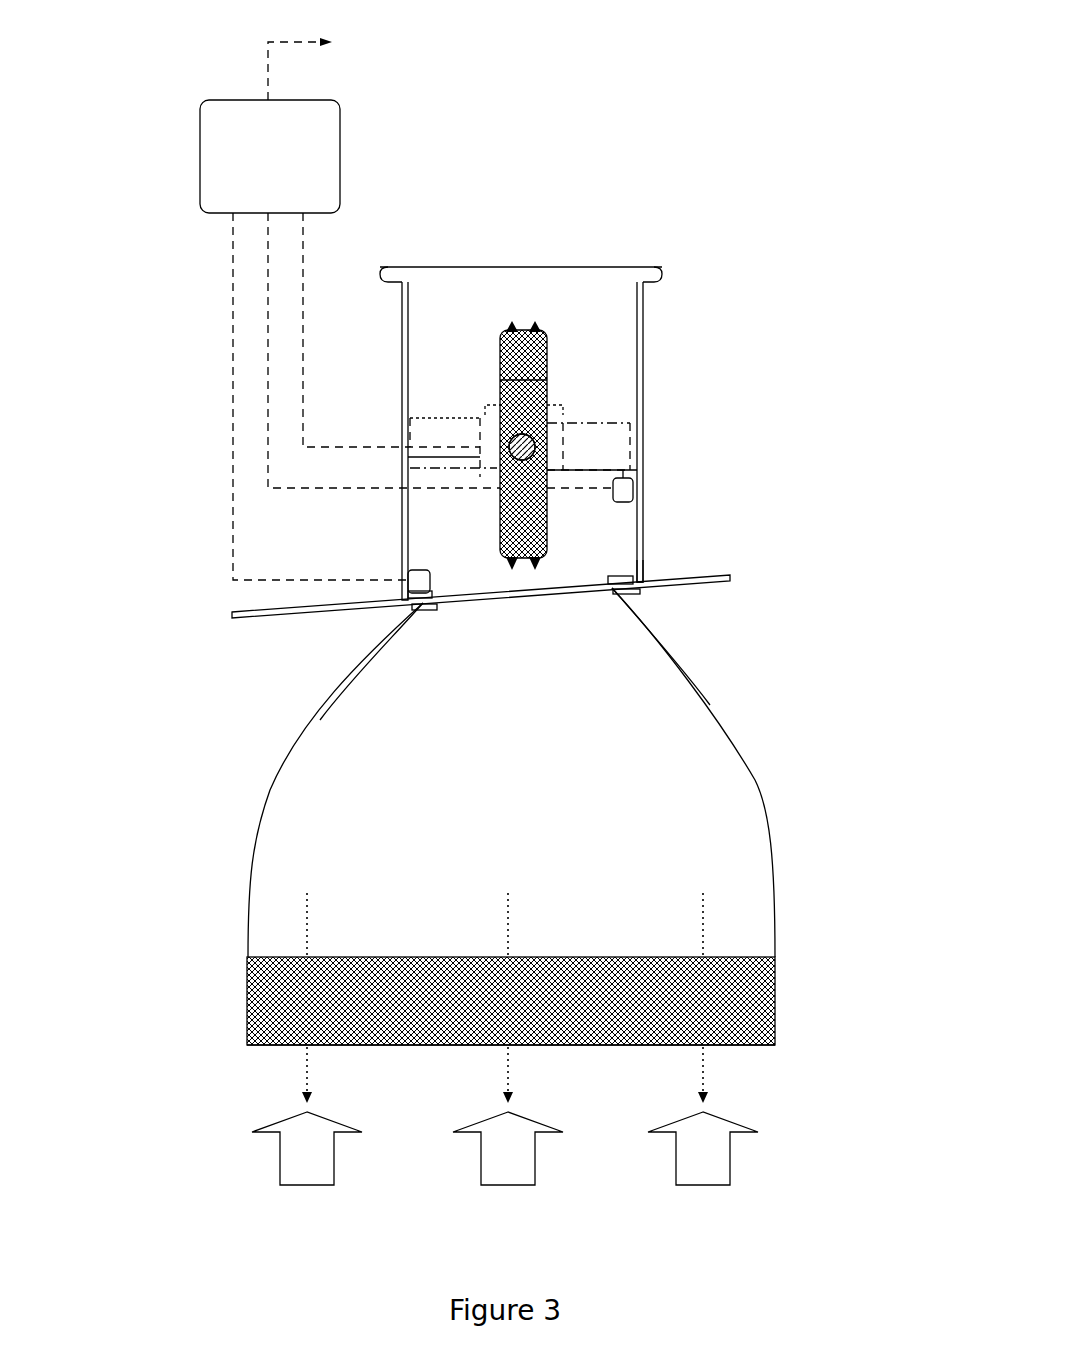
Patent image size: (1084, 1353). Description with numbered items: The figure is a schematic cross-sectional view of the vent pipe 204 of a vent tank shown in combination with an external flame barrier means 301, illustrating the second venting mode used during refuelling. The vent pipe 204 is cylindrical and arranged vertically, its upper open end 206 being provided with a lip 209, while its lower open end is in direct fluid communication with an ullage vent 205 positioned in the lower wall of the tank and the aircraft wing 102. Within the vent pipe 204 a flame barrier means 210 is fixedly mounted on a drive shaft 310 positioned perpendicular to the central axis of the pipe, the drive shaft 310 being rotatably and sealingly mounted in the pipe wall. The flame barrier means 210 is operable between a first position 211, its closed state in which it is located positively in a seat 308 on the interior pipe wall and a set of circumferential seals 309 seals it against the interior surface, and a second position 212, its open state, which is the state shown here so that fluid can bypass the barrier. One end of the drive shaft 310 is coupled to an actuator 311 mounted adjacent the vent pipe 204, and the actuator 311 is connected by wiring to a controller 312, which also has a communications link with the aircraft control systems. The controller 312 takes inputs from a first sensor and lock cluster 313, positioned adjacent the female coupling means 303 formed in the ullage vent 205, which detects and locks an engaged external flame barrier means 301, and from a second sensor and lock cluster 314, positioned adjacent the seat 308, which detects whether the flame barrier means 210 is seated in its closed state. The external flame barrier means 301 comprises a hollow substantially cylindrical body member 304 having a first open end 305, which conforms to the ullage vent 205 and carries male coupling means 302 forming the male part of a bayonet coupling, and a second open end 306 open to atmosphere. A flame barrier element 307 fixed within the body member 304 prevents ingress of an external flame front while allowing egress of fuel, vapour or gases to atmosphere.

The aircraft wing 102 is at (233, 613).
The vent pipe 204 is at (645, 565).
The ullage vent 205 is at (608, 585).
The upper open end 206 is at (628, 267).
The lip 209 is at (661, 277).
The flame barrier means 210 is at (531, 388).
The first position 211 is at (631, 423).
The second position 212 is at (546, 397).
The external flame barrier means 301 is at (222, 893).
The male coupling means 302 is at (412, 607).
The female coupling means 303 is at (404, 602).
The body member 304 is at (767, 818).
The first open end 305 is at (477, 603).
The second open end 306 is at (303, 1047).
The flame barrier element 307 is at (650, 997).
The seat 308 is at (408, 424).
The circumferential seals 309 is at (536, 322).
The drive shaft 310 is at (516, 436).
The actuator 311 is at (400, 457).
The controller 312 is at (235, 100).
The first sensor and lock cluster 313 is at (418, 582).
The second sensor and lock cluster 314 is at (637, 490).